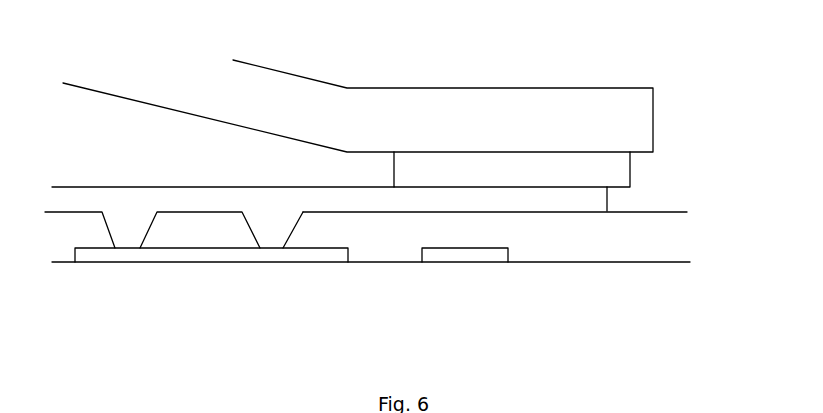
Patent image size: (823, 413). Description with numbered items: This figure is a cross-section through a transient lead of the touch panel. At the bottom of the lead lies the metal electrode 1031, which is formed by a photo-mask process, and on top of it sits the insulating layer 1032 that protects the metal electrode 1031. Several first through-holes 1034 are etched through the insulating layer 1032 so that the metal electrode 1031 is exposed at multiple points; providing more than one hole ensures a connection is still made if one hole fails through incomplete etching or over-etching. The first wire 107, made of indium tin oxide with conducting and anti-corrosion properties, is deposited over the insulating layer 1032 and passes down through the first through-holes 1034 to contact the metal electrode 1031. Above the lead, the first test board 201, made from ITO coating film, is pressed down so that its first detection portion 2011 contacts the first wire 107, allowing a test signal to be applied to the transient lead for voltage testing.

The first test board 201 is at (613, 122).
The first detection portion 2011 is at (518, 162).
The first wire 107 is at (608, 202).
The insulating layer 1032 is at (650, 235).
The first through-hole 1034 is at (125, 227).
The metal electrode 1031 is at (458, 262).